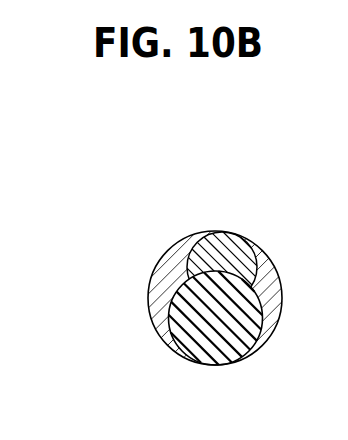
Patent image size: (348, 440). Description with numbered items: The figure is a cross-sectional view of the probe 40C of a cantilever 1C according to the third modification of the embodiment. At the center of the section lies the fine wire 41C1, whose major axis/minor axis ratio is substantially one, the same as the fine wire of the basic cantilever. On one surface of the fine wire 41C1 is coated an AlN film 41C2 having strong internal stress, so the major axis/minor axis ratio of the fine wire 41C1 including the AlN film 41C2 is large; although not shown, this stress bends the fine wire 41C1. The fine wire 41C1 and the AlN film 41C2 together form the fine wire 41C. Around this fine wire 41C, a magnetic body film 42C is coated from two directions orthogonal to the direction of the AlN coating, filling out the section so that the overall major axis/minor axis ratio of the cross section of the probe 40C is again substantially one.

The probe 40C is at (236, 264).
The cantilever 1C is at (235, 215).
The fine wire 41C is at (103, 202).
The fine wire 41C1 is at (170, 307).
The AlN film 41C2 is at (198, 257).
The magnetic body film 42C is at (256, 347).